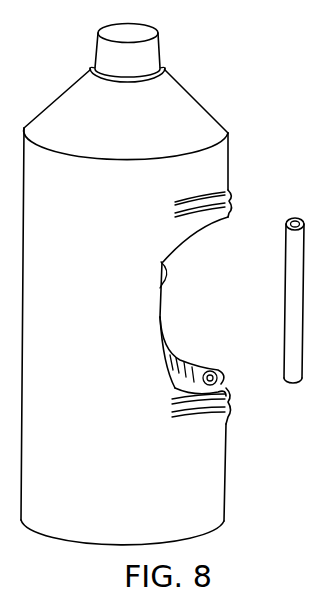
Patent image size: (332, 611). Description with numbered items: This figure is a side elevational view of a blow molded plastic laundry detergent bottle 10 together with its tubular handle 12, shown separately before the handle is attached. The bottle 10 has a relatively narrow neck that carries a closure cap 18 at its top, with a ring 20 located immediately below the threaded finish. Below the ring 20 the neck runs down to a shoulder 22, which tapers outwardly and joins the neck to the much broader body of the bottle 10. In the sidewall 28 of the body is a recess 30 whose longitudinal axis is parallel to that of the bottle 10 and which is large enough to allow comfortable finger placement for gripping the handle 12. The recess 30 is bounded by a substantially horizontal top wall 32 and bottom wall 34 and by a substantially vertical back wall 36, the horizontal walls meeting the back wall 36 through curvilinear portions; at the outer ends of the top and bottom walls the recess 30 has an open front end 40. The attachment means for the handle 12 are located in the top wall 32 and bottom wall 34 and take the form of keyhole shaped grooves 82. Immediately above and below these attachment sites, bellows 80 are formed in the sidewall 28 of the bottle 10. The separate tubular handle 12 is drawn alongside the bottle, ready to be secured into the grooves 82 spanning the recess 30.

The bottle 10 is at (124, 336).
The handle 12 is at (283, 350).
The closure cap 18 is at (96, 50).
The ring 20 is at (162, 69).
The shoulder 22 is at (192, 97).
The sidewall 28 is at (227, 430).
The recess 30 is at (179, 293).
The top wall 32 is at (206, 229).
The bottom wall 34 is at (197, 390).
The back wall 36 is at (162, 260).
The open front end 40 is at (220, 300).
The bellows 80 is at (197, 197).
The keyhole shaped grooves 82 is at (210, 371).